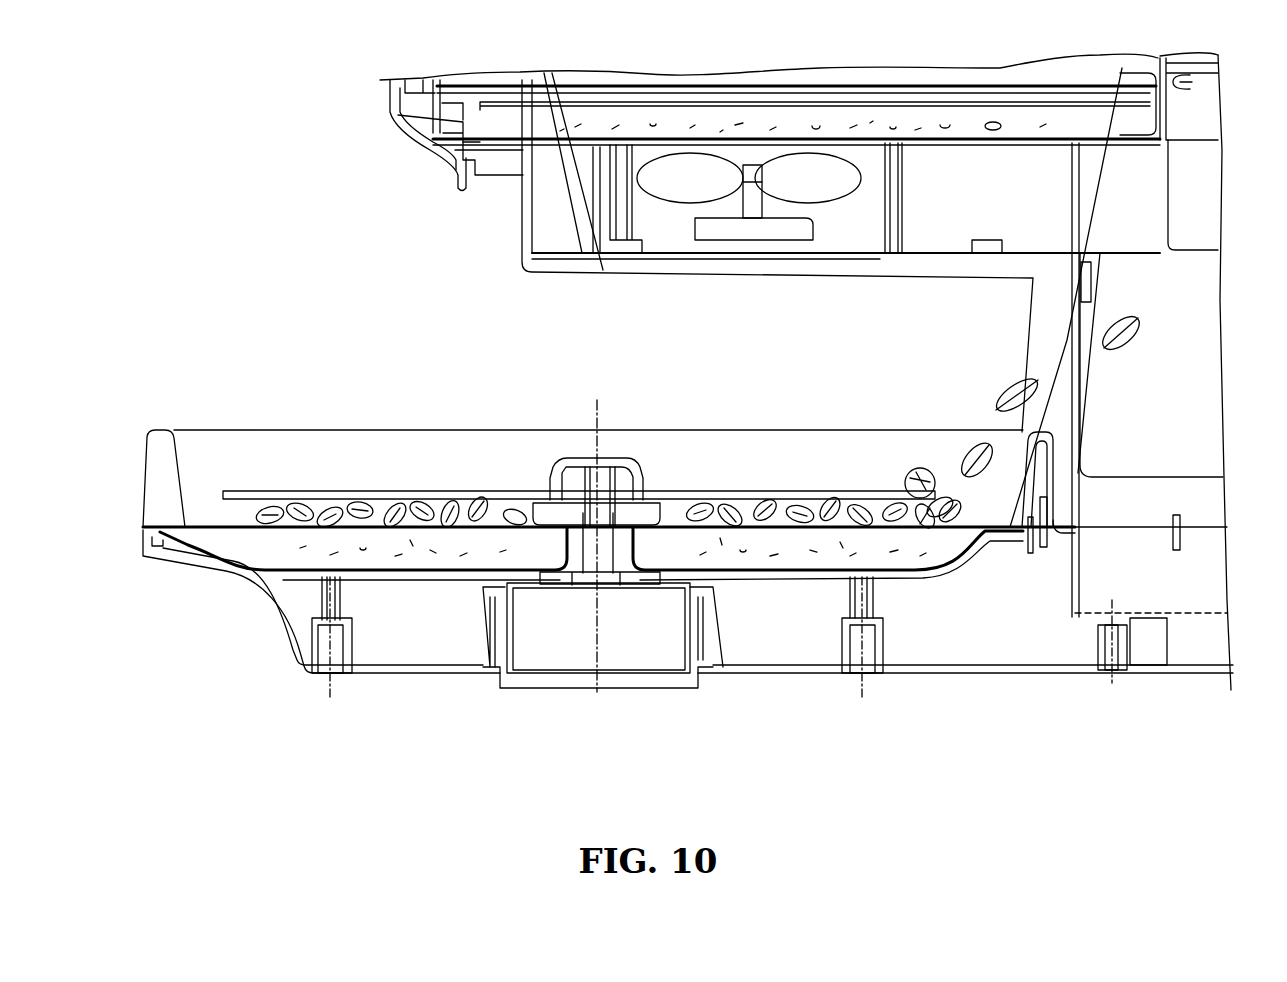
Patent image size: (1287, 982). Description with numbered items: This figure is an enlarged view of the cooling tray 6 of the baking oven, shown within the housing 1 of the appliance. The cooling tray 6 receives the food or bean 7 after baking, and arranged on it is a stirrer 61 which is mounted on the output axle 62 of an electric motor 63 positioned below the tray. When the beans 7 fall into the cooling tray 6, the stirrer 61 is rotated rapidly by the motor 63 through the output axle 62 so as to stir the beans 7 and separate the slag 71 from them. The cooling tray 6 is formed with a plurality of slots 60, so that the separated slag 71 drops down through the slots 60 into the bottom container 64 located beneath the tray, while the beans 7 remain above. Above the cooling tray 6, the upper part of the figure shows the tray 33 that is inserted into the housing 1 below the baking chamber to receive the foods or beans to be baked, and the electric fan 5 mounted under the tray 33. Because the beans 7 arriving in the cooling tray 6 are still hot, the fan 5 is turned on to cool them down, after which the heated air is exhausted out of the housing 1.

The housing 1 is at (1183, 425).
The electric fan 5 is at (722, 232).
The cooling tray 6 is at (145, 450).
The food or bean 7 is at (475, 505).
The tray 33 is at (426, 150).
The slots 60 is at (420, 572).
The stirrer 61 is at (264, 500).
The output axle 62 is at (590, 568).
The electric motor 63 is at (632, 633).
The container 64 is at (250, 570).
The slag 71 is at (940, 130).